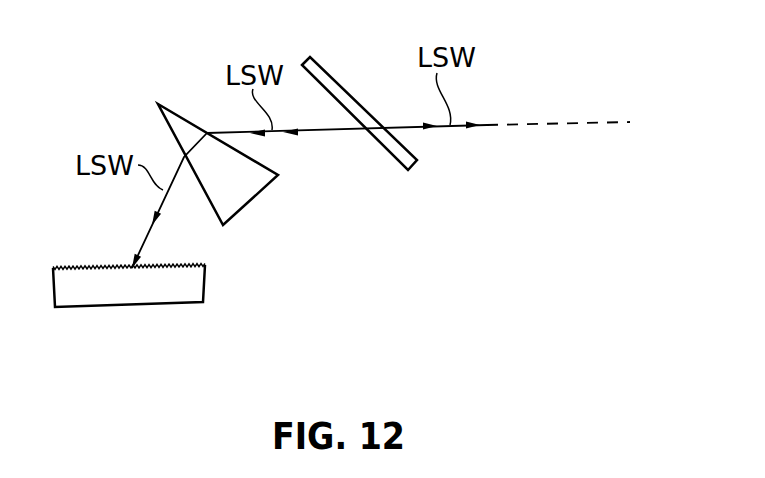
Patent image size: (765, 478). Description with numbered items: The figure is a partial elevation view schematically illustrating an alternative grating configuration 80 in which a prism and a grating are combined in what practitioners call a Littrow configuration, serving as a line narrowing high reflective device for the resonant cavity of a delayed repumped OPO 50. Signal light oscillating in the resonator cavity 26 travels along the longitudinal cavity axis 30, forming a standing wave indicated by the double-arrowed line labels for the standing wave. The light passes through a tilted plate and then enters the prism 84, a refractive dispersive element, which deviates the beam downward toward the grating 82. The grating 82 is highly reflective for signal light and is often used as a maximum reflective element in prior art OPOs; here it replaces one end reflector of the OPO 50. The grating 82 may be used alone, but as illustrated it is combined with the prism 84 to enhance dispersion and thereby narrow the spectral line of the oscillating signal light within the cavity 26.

The resonator cavity 26 is at (117, 236).
The longitudinal cavity axis 30 is at (538, 122).
The OPO 50 is at (178, 388).
The grating configuration 80 is at (252, 284).
The grating 82 is at (148, 295).
The prism 84 is at (250, 205).